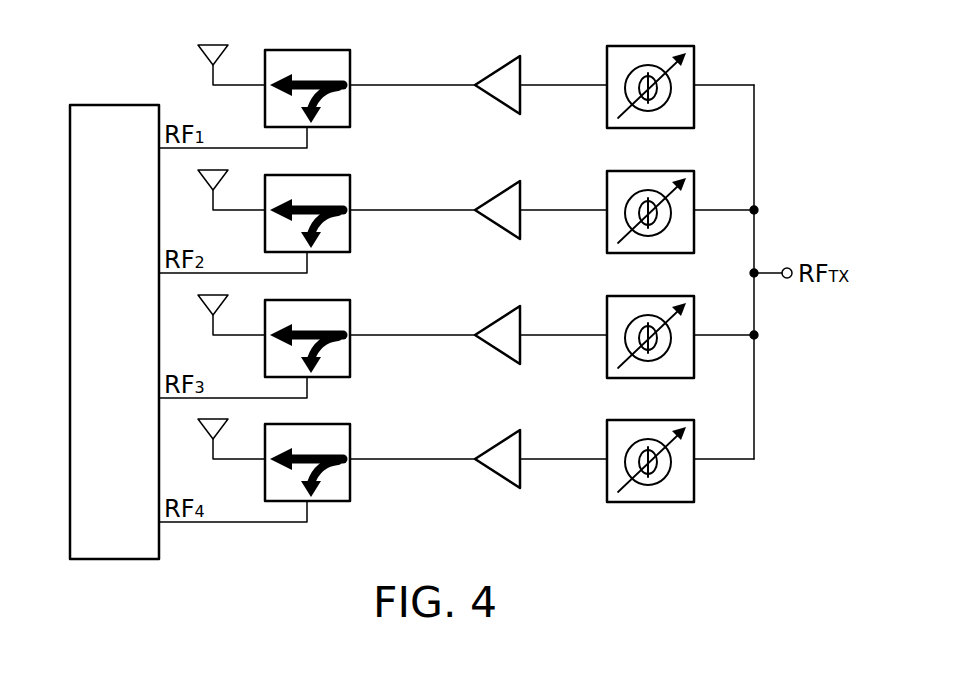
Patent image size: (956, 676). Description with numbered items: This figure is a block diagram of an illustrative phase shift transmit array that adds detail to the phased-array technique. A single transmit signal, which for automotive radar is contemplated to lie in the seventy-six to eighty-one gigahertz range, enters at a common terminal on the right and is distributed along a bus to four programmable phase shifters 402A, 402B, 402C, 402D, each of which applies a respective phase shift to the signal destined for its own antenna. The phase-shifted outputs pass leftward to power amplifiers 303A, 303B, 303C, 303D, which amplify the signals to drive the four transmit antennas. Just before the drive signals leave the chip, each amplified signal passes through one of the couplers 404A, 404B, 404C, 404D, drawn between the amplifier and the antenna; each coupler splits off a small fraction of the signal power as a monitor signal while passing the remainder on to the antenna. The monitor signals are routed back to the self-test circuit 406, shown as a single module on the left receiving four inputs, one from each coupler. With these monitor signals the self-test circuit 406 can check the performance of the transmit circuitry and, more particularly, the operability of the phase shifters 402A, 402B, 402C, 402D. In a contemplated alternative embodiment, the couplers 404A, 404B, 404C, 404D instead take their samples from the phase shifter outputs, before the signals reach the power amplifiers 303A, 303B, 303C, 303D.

The self-test circuit 406 is at (87, 102).
The coupler 404A is at (315, 51).
The coupler 404B is at (315, 176).
The coupler 404C is at (315, 301).
The coupler 404D is at (315, 425).
The power amplifier 303A is at (500, 105).
The power amplifier 303B is at (500, 230).
The power amplifier 303C is at (500, 355).
The power amplifier 303D is at (500, 479).
The programmable phase shifter 402A is at (628, 129).
The programmable phase shifter 402B is at (628, 254).
The programmable phase shifter 402C is at (628, 379).
The programmable phase shifter 402D is at (628, 503).